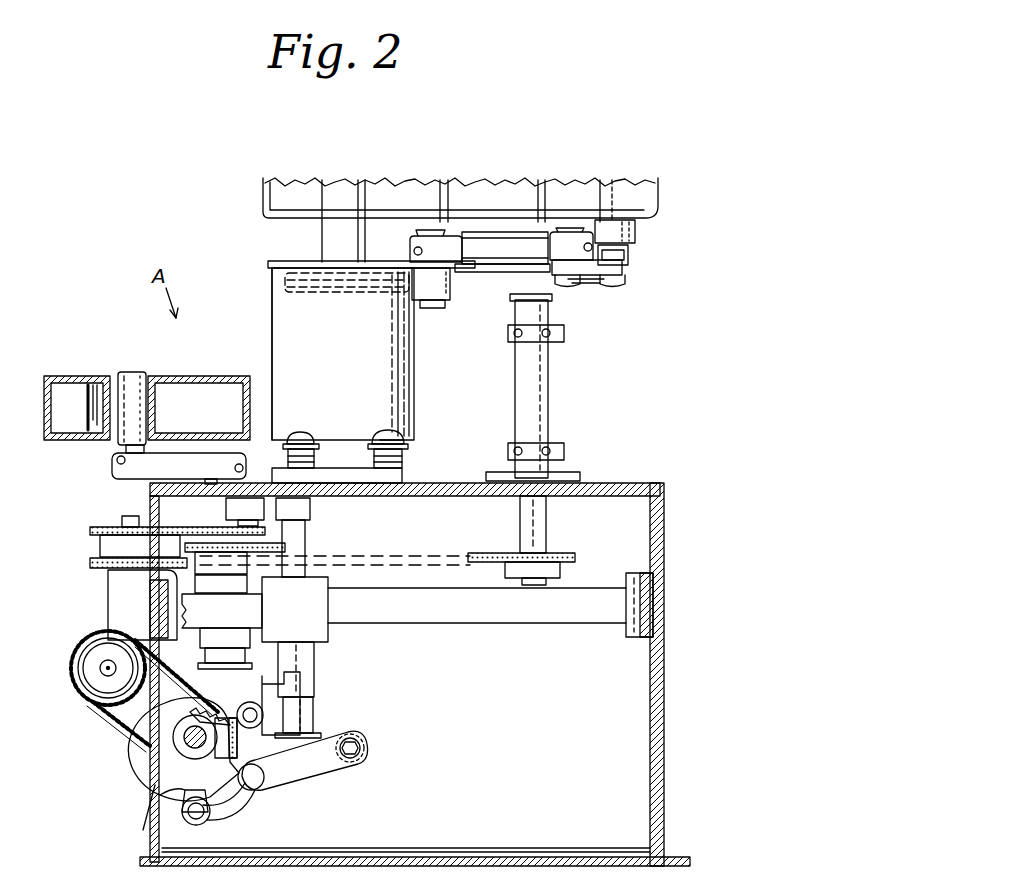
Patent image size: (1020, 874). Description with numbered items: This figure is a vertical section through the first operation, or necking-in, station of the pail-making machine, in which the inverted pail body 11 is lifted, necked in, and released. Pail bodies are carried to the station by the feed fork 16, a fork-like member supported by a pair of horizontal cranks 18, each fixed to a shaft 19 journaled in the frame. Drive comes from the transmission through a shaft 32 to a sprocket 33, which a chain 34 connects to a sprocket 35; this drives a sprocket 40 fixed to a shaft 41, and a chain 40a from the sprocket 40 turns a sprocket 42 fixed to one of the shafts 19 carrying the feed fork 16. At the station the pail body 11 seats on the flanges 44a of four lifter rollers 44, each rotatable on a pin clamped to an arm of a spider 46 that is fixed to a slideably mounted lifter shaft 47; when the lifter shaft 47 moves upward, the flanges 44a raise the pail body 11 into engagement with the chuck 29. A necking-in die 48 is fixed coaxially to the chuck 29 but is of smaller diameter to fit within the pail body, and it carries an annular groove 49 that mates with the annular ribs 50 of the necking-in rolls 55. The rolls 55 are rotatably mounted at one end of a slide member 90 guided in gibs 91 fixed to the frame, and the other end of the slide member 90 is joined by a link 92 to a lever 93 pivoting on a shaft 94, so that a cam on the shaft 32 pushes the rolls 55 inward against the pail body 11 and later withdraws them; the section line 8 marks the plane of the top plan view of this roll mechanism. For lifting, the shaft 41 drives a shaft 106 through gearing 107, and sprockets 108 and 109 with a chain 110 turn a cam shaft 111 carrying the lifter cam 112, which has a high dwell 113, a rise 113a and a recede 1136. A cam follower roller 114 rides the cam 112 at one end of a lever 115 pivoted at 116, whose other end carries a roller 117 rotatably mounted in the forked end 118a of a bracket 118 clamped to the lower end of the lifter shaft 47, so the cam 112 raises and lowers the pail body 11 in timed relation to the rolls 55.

The section line 8- 8 is at (396, 240).
The pail body 11 is at (362, 376).
The feed fork 16 is at (92, 372).
The horizontal cranks 18 is at (184, 478).
The shaft 19 is at (232, 526).
The chuck 29 is at (288, 268).
The shaft 32 is at (549, 302).
The sprocket 33 is at (570, 552).
The chain 34 is at (480, 552).
The sprocket 35 is at (92, 568).
The sprocket 40 is at (92, 531).
The chain 40a is at (162, 527).
The shaft 41 is at (128, 514).
The sprocket 42 is at (283, 530).
The lifter rollers 44 is at (408, 432).
The flange 44a is at (406, 446).
The spider 46 is at (348, 470).
The lifter shaft 47 is at (298, 552).
The necking-in die 48 is at (318, 294).
The annular groove 49 is at (270, 282).
The annular ribs 50 is at (450, 268).
The necking-in rolls 55 is at (436, 296).
The slide member 90 is at (462, 246).
The gibs 91 is at (497, 236).
The link 92 is at (592, 286).
The lever 93 is at (636, 243).
The shaft 94 is at (630, 266).
The shaft 106 is at (100, 668).
The gearing 107 is at (138, 690).
The sprocket 108 is at (75, 682).
The sprocket 109 is at (268, 712).
The chain 110 is at (128, 735).
The cam shaft 111 is at (184, 744).
The lifter cam 112 is at (198, 785).
The high dwell 113 is at (162, 786).
The rise 113a is at (210, 820).
The recede 1136 is at (192, 710).
The cam follower roller 114 is at (184, 822).
The lever 115 is at (240, 808).
The pivot 116 is at (263, 784).
The roller 117 is at (362, 748).
The bracket 118 is at (332, 738).
The forked end 118a is at (362, 756).